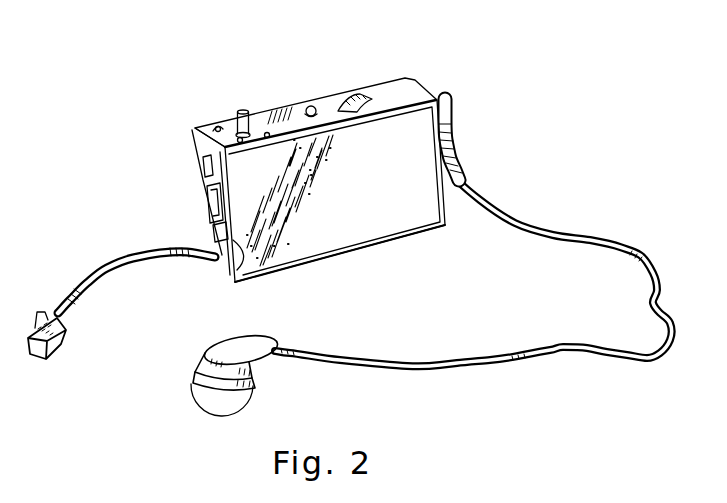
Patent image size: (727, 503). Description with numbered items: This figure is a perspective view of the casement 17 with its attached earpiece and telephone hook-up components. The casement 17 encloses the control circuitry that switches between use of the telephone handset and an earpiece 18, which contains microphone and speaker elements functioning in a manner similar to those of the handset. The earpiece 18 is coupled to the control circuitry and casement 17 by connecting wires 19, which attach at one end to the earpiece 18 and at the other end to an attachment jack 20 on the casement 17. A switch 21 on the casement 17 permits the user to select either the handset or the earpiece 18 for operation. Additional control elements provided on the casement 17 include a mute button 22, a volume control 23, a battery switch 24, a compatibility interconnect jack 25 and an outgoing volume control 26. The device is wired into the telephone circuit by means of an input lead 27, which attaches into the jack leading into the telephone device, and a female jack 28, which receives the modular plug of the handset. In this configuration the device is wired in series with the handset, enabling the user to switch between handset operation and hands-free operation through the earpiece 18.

The casement 17 is at (280, 104).
The earpiece 18 is at (188, 378).
The connecting wires 19 is at (549, 232).
The attachment jack 20 is at (454, 102).
The switch 21 is at (243, 109).
The mute button 22 is at (313, 106).
The volume control 23 is at (360, 93).
The battery switch 24 is at (201, 164).
The compatibility interconnect jack 25 is at (232, 284).
The outgoing volume control 26 is at (205, 128).
The input lead 27 is at (87, 279).
The female jack 28 is at (206, 199).